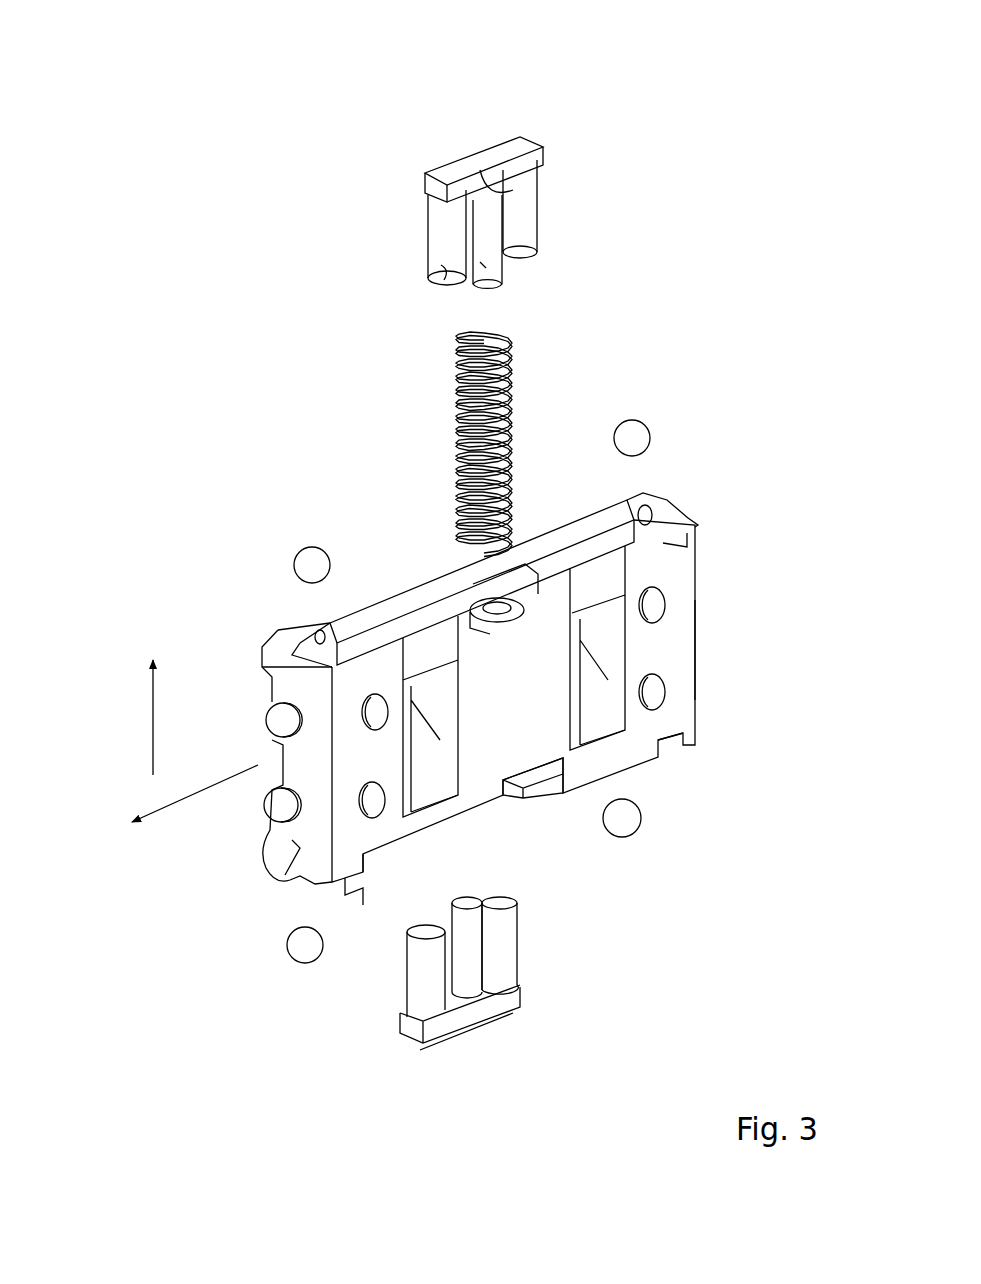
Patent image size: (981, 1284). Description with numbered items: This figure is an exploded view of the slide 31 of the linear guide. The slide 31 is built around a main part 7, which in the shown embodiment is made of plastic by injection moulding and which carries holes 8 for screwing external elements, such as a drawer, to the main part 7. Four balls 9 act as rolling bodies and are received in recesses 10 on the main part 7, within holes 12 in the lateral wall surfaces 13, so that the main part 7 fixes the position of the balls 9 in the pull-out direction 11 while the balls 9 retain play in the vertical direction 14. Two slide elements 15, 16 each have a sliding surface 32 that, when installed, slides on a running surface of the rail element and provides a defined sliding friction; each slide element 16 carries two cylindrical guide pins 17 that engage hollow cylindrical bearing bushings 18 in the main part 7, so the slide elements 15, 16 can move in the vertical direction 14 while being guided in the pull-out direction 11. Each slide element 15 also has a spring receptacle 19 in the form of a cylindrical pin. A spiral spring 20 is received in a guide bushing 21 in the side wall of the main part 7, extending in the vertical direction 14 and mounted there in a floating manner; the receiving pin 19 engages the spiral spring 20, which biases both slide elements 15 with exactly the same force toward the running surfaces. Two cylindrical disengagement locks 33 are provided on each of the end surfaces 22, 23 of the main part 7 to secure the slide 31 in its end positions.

The main part 7 is at (497, 772).
The holes 8 is at (376, 710).
The balls 9 is at (632, 438).
The recesses 10 is at (293, 627).
The pull-out direction 11 is at (178, 807).
The holes 12 is at (337, 623).
The lateral wall surfaces 13 is at (307, 667).
The vertical direction 14 is at (150, 700).
The slide element 15 is at (482, 176).
The slide element 16 is at (517, 1033).
The guide pins 17 is at (430, 275).
The bearing bushings 18 is at (493, 583).
The spring receptacle 19 is at (490, 275).
The spiral spring 20 is at (458, 437).
The guide bushing 21 is at (473, 607).
The end surface 22 is at (295, 848).
The end surface 23 is at (700, 645).
The slide 31 is at (715, 318).
The sliding surface 32 is at (472, 160).
The disengagement locks 33 is at (265, 722).